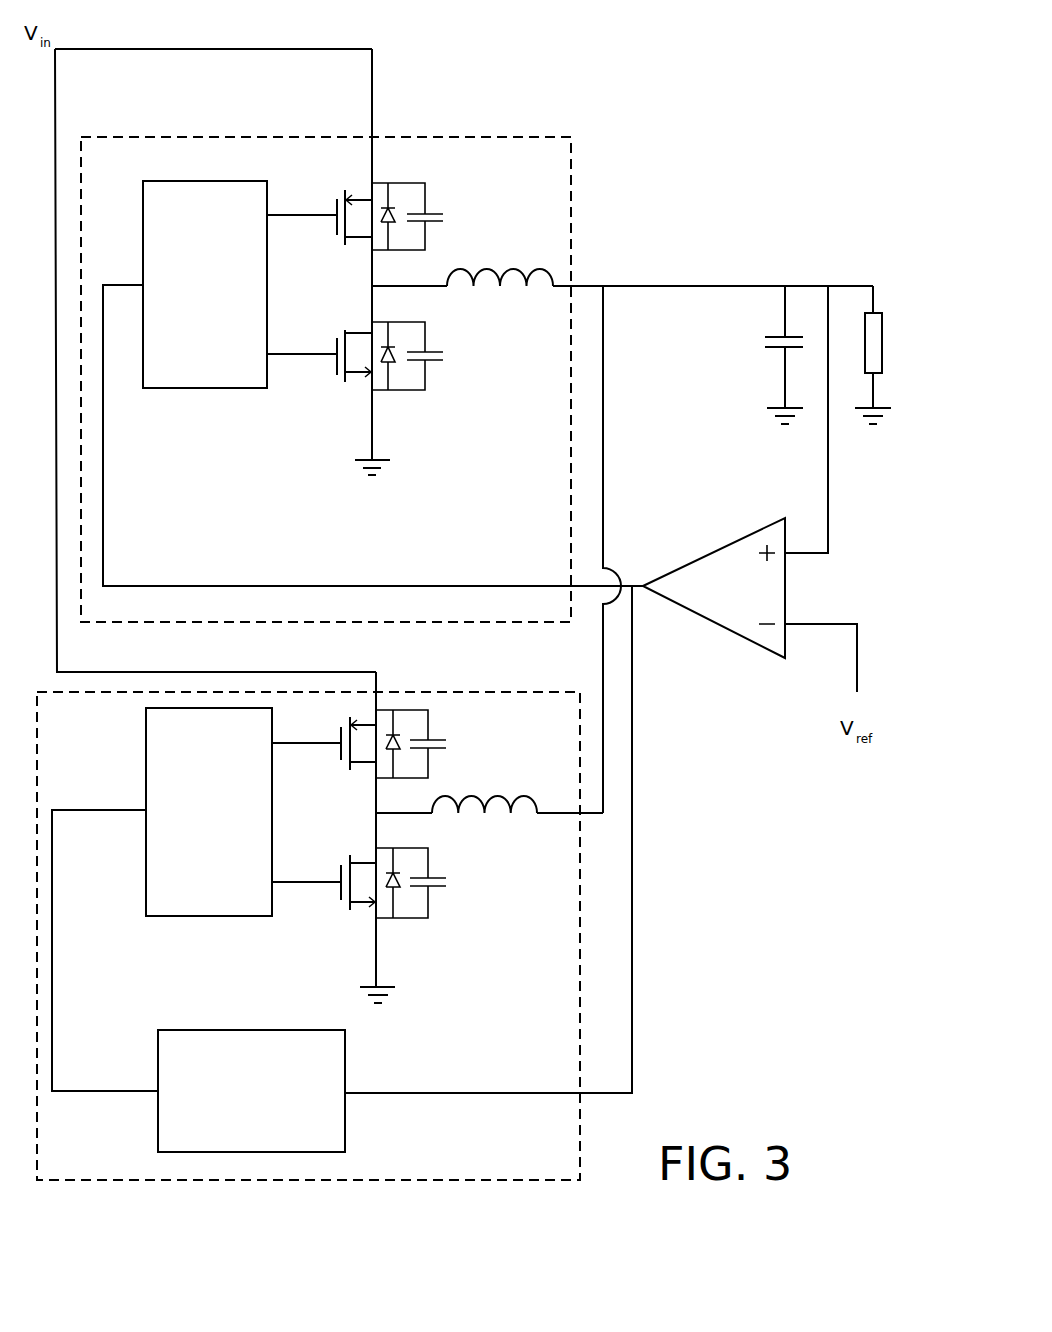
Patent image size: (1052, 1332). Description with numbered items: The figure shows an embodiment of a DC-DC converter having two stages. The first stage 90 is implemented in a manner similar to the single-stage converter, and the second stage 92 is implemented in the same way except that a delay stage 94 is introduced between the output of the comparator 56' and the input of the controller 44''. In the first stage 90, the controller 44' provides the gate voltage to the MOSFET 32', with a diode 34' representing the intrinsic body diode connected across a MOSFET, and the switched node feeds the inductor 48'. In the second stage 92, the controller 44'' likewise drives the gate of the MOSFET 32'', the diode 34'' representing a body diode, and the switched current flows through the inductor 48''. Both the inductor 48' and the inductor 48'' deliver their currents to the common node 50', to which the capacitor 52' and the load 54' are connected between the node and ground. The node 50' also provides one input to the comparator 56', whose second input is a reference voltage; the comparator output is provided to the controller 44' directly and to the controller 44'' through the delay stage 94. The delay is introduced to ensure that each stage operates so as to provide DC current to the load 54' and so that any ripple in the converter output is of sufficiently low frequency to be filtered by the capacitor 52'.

The first stage 90 is at (432, 136).
The second stage 92 is at (340, 1181).
The delay stage 94 is at (230, 1152).
The MOSFET 32' is at (354, 199).
The diode 34' is at (355, 377).
The controller 44' is at (227, 354).
The inductor 48' is at (503, 222).
The common node 50' is at (793, 246).
The capacitor 52' is at (752, 370).
The load 54' is at (864, 374).
The comparator 56' is at (730, 717).
The MOSFET 32'' is at (359, 763).
The diode 34'' is at (359, 901).
The controller 44'' is at (222, 852).
The inductor 48'' is at (484, 858).